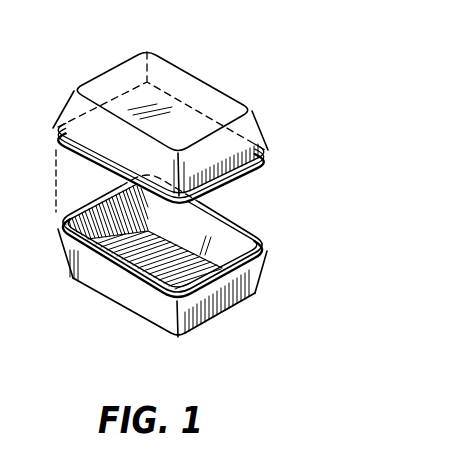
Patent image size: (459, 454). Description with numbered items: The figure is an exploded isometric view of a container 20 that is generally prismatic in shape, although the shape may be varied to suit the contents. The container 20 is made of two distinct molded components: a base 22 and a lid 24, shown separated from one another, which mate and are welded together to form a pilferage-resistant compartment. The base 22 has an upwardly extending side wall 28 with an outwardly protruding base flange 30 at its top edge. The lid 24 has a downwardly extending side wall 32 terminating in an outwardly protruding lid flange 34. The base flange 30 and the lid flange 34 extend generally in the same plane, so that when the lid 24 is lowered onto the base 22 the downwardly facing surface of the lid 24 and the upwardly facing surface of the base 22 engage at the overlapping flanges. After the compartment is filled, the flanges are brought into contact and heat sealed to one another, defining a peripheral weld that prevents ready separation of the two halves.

The container 20 is at (252, 63).
The base 22 is at (193, 330).
The lid 24 is at (240, 100).
The side wall 28 is at (240, 222).
The base flange 30 is at (263, 256).
The side wall 32 is at (253, 126).
The lid flange 34 is at (263, 143).